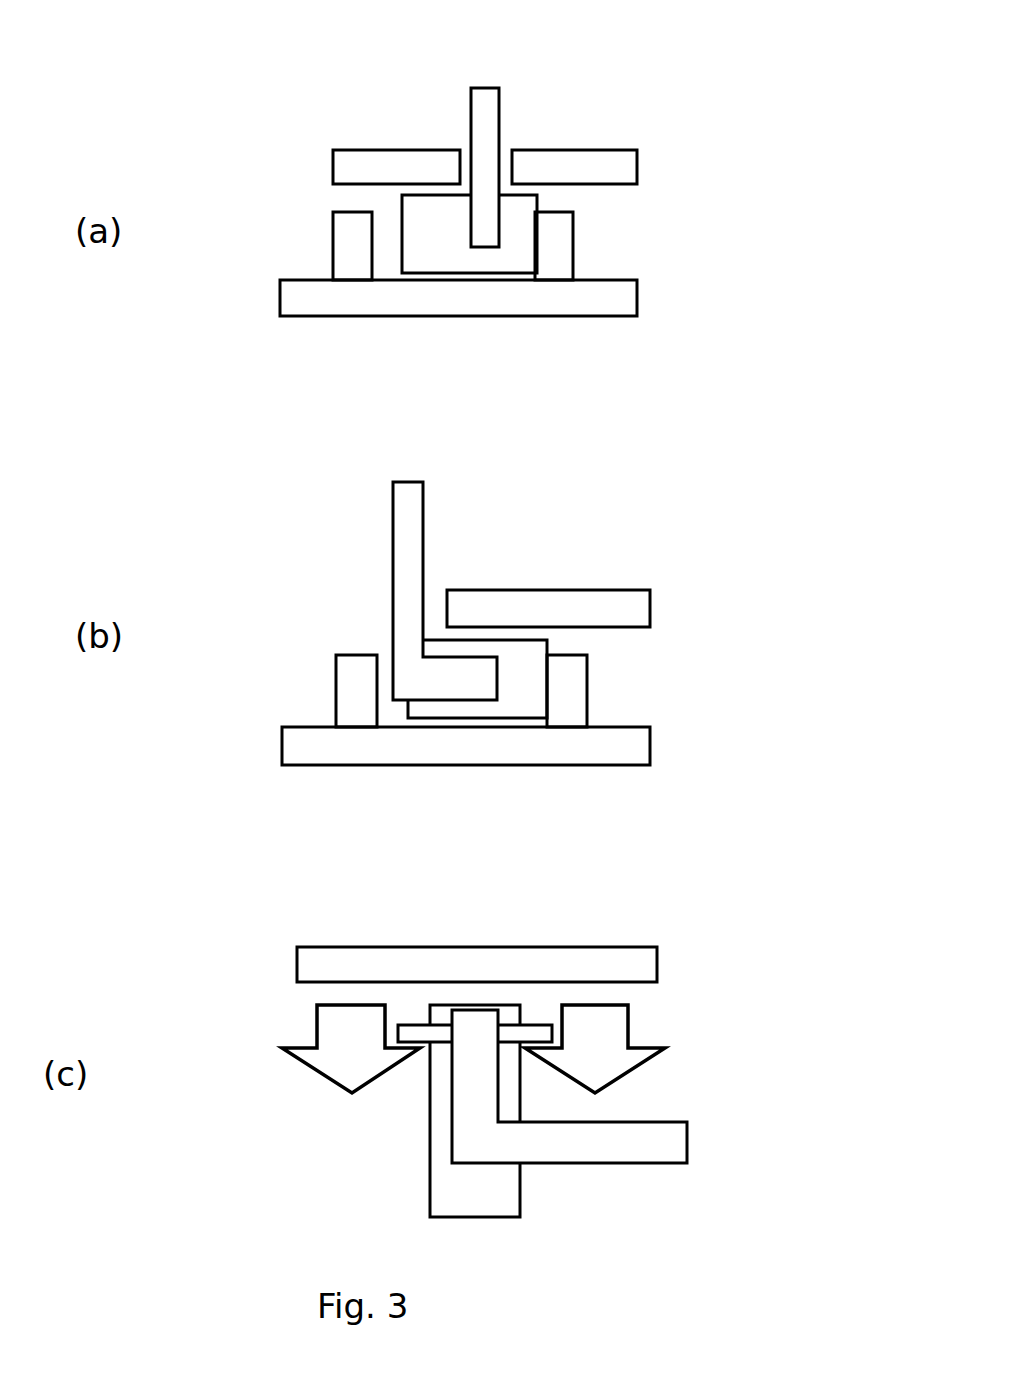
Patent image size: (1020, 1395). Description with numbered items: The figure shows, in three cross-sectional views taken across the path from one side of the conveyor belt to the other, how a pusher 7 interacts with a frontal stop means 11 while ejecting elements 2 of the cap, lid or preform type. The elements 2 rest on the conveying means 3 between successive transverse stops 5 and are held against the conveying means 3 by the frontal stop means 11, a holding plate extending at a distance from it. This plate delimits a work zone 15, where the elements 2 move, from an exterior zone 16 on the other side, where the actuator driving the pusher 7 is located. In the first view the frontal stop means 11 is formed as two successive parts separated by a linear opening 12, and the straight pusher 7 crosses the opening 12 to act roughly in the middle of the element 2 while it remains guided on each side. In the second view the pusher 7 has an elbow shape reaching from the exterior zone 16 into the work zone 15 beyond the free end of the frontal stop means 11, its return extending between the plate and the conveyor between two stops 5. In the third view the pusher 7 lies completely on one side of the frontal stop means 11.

The element 2 is at (512, 248).
The conveying means 3 is at (688, 252).
The transverse stops 5 is at (352, 252).
The pusher 7 is at (478, 133).
The frontal stop means 11 is at (383, 138).
The opening 12 is at (460, 133).
The work zone 15 is at (687, 208).
The exterior zone 16 is at (652, 63).